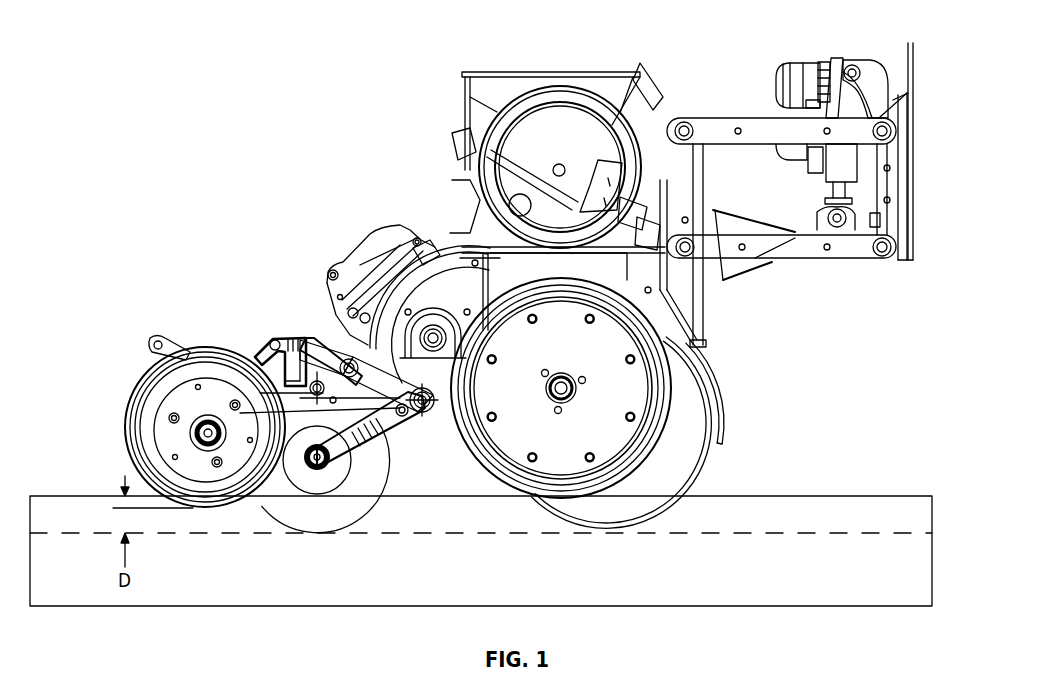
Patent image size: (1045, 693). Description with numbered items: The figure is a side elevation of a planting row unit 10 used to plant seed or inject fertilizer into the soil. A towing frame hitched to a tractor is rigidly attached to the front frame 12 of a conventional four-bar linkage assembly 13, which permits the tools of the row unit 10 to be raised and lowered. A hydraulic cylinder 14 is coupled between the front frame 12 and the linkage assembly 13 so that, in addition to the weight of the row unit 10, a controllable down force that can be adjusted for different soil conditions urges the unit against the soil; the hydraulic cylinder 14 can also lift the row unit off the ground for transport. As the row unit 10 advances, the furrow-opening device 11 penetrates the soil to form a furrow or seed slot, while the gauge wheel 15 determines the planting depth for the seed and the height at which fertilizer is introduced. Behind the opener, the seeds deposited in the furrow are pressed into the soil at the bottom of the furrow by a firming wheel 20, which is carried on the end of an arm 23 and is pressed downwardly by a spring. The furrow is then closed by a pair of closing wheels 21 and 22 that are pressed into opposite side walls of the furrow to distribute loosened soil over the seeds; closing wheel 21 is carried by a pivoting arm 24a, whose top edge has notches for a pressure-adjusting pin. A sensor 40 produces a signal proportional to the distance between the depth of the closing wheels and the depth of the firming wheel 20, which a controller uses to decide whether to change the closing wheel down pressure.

The planting row unit 10 is at (158, 104).
The furrow-opening device 11 is at (709, 456).
The front frame 12 is at (913, 198).
The four-bar linkage assembly 13 is at (726, 116).
The hydraulic cylinder 14 is at (856, 160).
The gauge wheel 15 is at (690, 367).
The firming wheel 20 is at (390, 473).
The closing wheel 21 is at (191, 394).
The closing wheel 22 is at (196, 343).
The arm 23 is at (395, 427).
The closing wheel support arm 24a is at (333, 402).
The sensor 40 is at (295, 368).